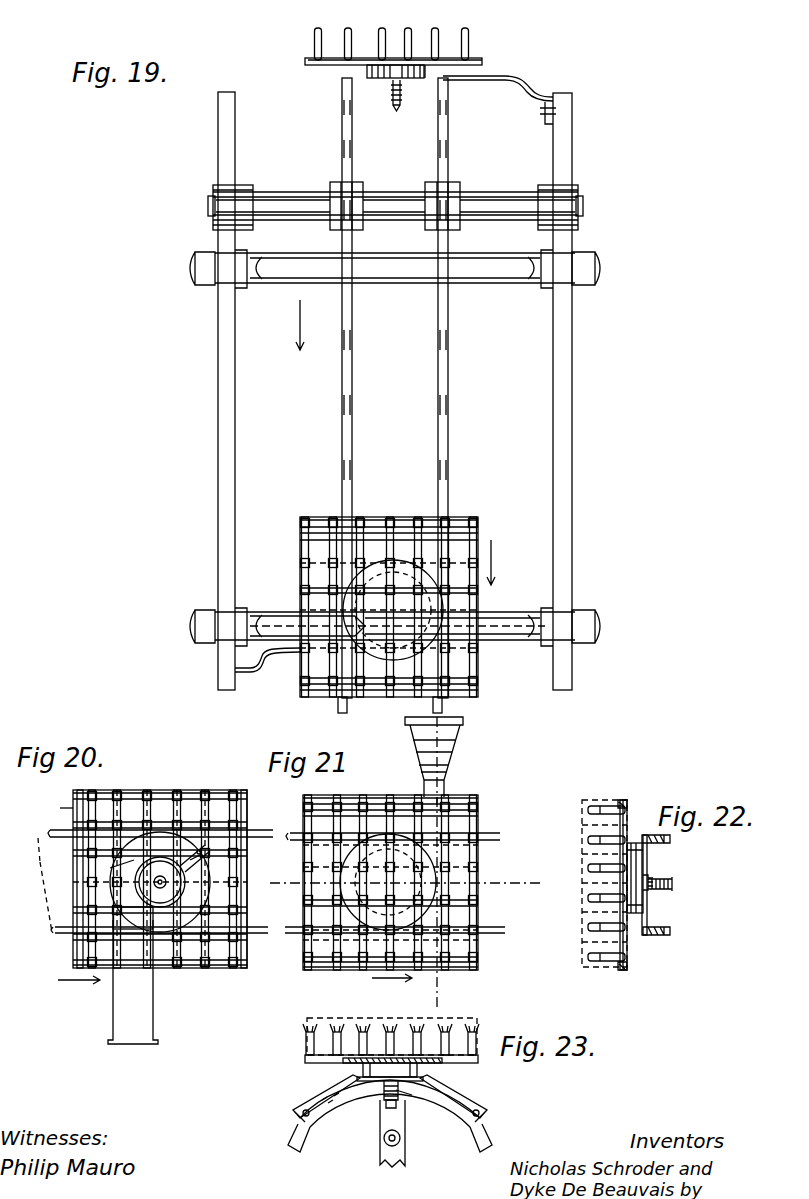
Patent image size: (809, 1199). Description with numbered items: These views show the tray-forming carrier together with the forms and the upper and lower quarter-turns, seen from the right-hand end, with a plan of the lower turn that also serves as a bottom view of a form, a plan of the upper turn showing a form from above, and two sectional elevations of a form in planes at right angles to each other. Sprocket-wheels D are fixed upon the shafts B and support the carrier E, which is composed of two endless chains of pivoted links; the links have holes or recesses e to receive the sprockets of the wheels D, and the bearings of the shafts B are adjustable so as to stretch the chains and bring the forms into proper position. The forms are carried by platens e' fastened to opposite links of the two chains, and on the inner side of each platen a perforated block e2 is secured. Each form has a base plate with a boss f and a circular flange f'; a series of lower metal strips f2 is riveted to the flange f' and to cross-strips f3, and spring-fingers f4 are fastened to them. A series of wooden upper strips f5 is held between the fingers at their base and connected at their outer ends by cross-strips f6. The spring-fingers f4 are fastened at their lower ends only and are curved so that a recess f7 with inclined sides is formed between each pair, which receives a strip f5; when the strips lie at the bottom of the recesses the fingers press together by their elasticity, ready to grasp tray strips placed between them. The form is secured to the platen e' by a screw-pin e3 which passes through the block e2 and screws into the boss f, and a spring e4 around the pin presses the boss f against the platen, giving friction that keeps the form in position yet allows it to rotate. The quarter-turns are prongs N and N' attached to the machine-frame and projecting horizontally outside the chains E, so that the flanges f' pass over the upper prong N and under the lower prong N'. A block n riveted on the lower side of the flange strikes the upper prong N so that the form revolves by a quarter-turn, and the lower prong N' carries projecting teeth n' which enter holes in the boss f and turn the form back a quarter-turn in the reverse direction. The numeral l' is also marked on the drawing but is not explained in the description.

In FIG. 19, the shaft B is at (294, 192).
In FIG. 19, the carrier E is at (393, 395).
In FIG. 20, the carrier E is at (52, 838).
In FIG. 23, the carrier E is at (285, 1128).
In FIG. 19, the upper prong of quarter-turn N is at (499, 89).
In FIG. 21, the upper prong of quarter-turn N is at (435, 761).
In FIG. 19, the lower prong of quarter-turn N' is at (267, 660).
In FIG. 20, the lower prong of quarter-turn N' is at (133, 982).
In FIG. 23, the sprocket-wheel D is at (392, 1144).
In FIG. 19, the boss f is at (373, 75).
In FIG. 20, the boss f is at (122, 869).
In FIG. 22, the boss f is at (636, 875).
In FIG. 23, the boss f is at (403, 1071).
In FIG. 19, the circular flange f' is at (389, 607).
In FIG. 20, the circular flange f' is at (160, 882).
In FIG. 21, the circular flange f' is at (359, 882).
In FIG. 23, the circular flange f' is at (379, 1069).
In FIG. 20, the lower strips f2 is at (183, 982).
In FIG. 21, the lower strips f2 is at (350, 810).
In FIG. 22, the lower strips f2 is at (627, 940).
In FIG. 20, the cross-strips f3 is at (222, 982).
In FIG. 21, the cross-strips f3 is at (348, 980).
In FIG. 22, the cross-strips f3 is at (627, 950).
In FIG. 19, the spring-fingers f4 is at (408, 35).
In FIG. 20, the spring-fingers f4 is at (175, 797).
In FIG. 21, the spring-fingers f4 is at (490, 898).
In FIG. 22, the spring-fingers f4 is at (582, 975).
In FIG. 23, the spring-fingers f4 is at (432, 1028).
In FIG. 21, the upper strips f5 is at (318, 795).
In FIG. 22, the upper strips f5 is at (610, 982).
In FIG. 23, the upper strips f5 is at (305, 1058).
In FIG. 20, the cross-strips f6 is at (58, 807).
In FIG. 22, the cross-strips f6 is at (625, 800).
In FIG. 23, the cross-strips f6 is at (458, 1034).
In FIG. 23, the recess f7 is at (328, 1034).
In FIG. 23, the holes or recesses e is at (390, 1098).
In FIG. 22, the platen e' is at (654, 885).
In FIG. 23, the platen e' is at (394, 1100).
In FIG. 19, the perforated block e2 is at (388, 82).
In FIG. 22, the perforated block e2 is at (650, 876).
In FIG. 23, the perforated block e2 is at (384, 1090).
In FIG. 22, the screw-pin e3 is at (655, 890).
In FIG. 23, the screw-pin e3 is at (386, 1104).
In FIG. 22, the spring e4 is at (672, 882).
In FIG. 23, the spring e4 is at (400, 1096).
In FIG. 20, the block n is at (164, 870).
In FIG. 22, the block n is at (635, 864).
In FIG. 20, the projecting teeth n' is at (137, 908).
In FIG. 19, the pin l' is at (420, 86).